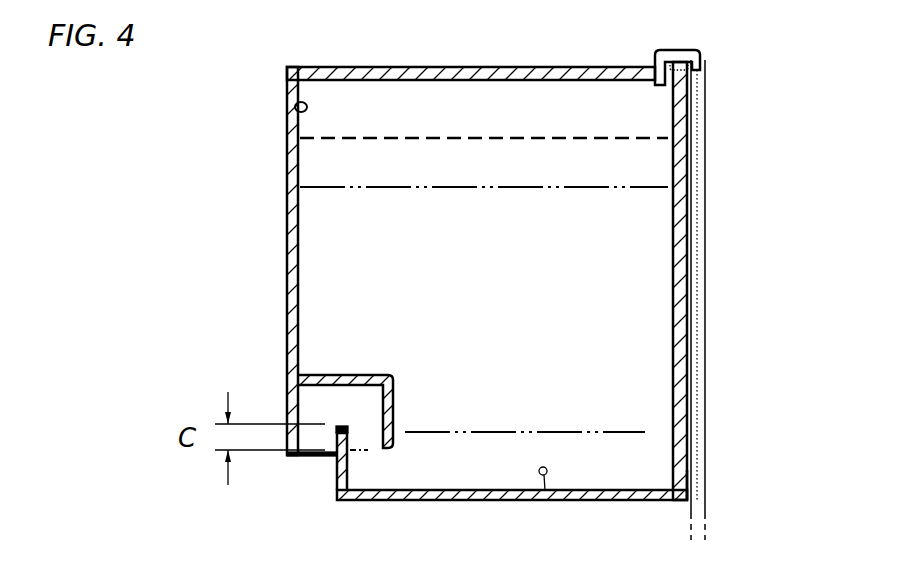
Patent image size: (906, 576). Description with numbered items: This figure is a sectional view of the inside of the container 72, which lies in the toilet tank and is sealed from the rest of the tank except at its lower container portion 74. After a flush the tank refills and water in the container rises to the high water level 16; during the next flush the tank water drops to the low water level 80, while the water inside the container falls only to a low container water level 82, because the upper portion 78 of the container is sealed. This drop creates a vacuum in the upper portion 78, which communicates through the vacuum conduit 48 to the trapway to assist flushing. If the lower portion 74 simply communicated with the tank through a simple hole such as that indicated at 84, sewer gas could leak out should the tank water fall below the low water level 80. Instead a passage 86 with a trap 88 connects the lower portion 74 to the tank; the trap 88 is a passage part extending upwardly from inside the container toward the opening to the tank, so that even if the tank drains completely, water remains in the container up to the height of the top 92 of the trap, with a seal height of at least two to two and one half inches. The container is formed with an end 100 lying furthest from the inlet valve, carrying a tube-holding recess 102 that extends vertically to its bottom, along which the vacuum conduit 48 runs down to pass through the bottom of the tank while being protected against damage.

The high water level 16 is at (292, 138).
The vacuum conduit 48 is at (685, 50).
The container 72 is at (287, 272).
The lower container portion 74 is at (688, 479).
The upper portion of the container 78 is at (290, 108).
The low water level 80 is at (645, 432).
The low container water level 82 is at (292, 184).
The simple hole 84 is at (545, 505).
The passage 86 is at (308, 396).
The trap 88 is at (372, 450).
The top of the trap 92 is at (345, 432).
The container end 100 is at (706, 170).
The tube-holding recess 102 is at (686, 213).